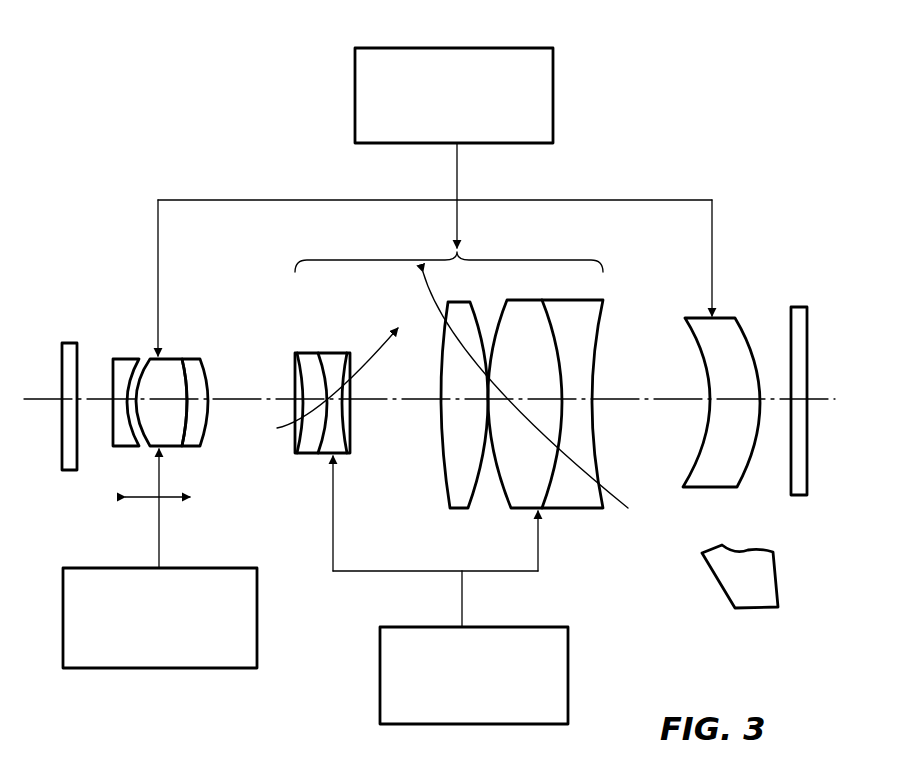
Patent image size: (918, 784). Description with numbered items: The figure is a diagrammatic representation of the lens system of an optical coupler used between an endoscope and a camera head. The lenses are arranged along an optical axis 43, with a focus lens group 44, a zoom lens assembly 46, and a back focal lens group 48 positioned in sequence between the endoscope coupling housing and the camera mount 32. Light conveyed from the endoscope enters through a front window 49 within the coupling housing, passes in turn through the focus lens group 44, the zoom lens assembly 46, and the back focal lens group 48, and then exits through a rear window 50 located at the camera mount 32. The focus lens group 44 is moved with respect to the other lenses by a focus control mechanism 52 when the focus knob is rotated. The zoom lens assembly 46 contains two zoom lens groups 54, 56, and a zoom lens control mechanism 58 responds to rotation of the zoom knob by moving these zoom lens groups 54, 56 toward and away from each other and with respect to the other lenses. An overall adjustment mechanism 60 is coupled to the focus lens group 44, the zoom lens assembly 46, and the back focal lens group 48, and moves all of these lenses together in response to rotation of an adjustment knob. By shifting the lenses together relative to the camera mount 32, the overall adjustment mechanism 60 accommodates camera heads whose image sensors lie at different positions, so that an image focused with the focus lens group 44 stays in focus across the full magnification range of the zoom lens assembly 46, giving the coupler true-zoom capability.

The camera mount 32 is at (745, 610).
The optical axis 43 is at (40, 400).
The focus lens group 44 is at (193, 451).
The zoom lens assembly 46 is at (357, 455).
The back focal lens group 48 is at (722, 488).
The front window 49 is at (67, 343).
The rear window 50 is at (793, 307).
The focus control mechanism 52 is at (196, 668).
The zoom lens group 54 is at (330, 353).
The zoom lens group 56 is at (578, 516).
The zoom lens control mechanism 58 is at (568, 693).
The overall adjustment mechanism 60 is at (553, 87).